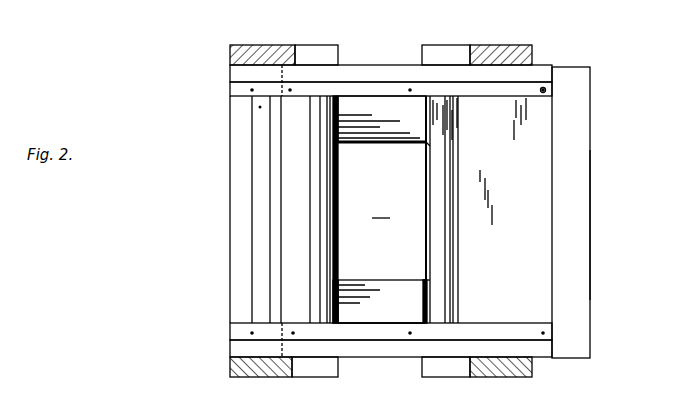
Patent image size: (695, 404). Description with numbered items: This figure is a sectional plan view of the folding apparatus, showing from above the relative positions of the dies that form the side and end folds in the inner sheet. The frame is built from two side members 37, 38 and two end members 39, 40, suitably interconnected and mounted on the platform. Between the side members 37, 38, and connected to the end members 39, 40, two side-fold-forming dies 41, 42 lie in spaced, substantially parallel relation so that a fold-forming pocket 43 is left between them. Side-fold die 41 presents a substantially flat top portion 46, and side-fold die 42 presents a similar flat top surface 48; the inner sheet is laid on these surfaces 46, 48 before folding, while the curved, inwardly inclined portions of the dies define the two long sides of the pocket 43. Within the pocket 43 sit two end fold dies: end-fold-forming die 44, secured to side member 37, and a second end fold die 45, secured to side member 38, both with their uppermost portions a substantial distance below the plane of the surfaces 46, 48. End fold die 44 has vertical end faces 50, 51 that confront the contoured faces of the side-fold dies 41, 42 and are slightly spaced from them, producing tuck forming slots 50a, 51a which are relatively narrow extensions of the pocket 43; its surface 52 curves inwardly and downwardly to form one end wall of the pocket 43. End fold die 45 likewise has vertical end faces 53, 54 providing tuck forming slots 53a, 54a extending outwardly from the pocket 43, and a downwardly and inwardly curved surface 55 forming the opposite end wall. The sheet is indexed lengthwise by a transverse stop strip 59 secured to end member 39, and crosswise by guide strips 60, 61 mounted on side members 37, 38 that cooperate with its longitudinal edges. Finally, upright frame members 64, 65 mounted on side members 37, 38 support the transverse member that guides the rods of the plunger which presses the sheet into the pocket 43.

The side member 37 is at (346, 347).
The side member 38 is at (395, 77).
The end member 39 is at (240, 255).
The end member 40 is at (572, 268).
The side-fold-forming die 41 is at (325, 196).
The side-fold-forming die 42 is at (437, 227).
The fold-forming pocket 43 is at (380, 211).
The end-fold-forming die 44 is at (375, 297).
The second end fold die 45 is at (395, 128).
The flat top portion 46 is at (288, 184).
The flat top surface 48 is at (542, 200).
The vertical end face 50 is at (330, 313).
The tuck forming slot 50a is at (335, 280).
The vertical end face 51 is at (427, 308).
The tuck forming slot 51a is at (425, 280).
The curved surface 52 is at (402, 312).
The vertical end face 53 is at (332, 125).
The tuck forming slot 53a is at (338, 143).
The vertical end face 54 is at (430, 118).
The tuck forming slot 54a is at (428, 148).
The curved surface 55 is at (366, 108).
The transverse stop strip 59 is at (258, 120).
The guide strip 60 is at (503, 338).
The guide strip 61 is at (537, 92).
The upright frame member 64 is at (266, 362).
The upright frame member 65 is at (490, 50).